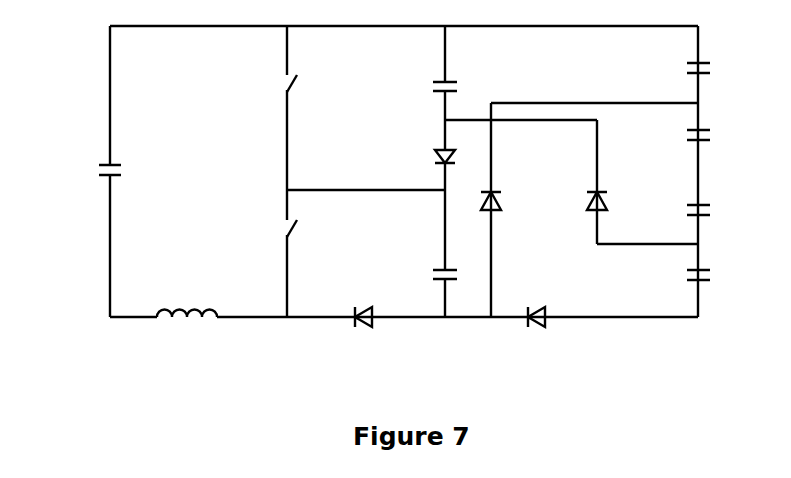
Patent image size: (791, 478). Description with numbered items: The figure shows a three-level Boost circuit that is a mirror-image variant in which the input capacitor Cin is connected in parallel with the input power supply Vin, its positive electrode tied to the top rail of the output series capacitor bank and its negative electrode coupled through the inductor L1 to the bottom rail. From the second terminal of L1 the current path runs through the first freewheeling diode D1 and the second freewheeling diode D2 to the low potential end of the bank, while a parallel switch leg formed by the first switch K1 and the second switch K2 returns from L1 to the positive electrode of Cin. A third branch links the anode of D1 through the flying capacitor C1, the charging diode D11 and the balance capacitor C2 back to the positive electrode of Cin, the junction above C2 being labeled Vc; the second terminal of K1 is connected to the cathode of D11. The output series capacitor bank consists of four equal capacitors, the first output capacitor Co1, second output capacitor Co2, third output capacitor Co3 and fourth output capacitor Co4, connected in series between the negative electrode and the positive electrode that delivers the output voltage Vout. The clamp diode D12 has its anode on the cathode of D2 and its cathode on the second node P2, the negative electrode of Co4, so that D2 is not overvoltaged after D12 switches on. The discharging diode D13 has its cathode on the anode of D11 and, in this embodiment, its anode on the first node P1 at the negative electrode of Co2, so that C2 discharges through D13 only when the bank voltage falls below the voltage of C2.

The input voltage source Vin is at (67, 134).
The input capacitor Cin is at (129, 173).
The inductor L1 is at (187, 299).
The first switch K1 is at (267, 230).
The second switch K2 is at (267, 88).
The flying capacitor C1 is at (426, 278).
The balance capacitor C2 is at (423, 89).
The capacitor voltage node Vc is at (470, 57).
The first freewheeling diode D1 is at (367, 303).
The second freewheeling diode D2 is at (540, 305).
The charging diode D11 is at (422, 162).
The clamp diode D12 is at (510, 186).
The discharging diode D13 is at (617, 186).
The first output capacitor Co1 is at (676, 275).
The second output capacitor Co2 is at (676, 212).
The third output capacitor Co3 is at (676, 137).
The fourth output capacitor Co4 is at (676, 69).
The first node P1 is at (725, 249).
The second node P2 is at (725, 104).
The output voltage Vout is at (747, 49).